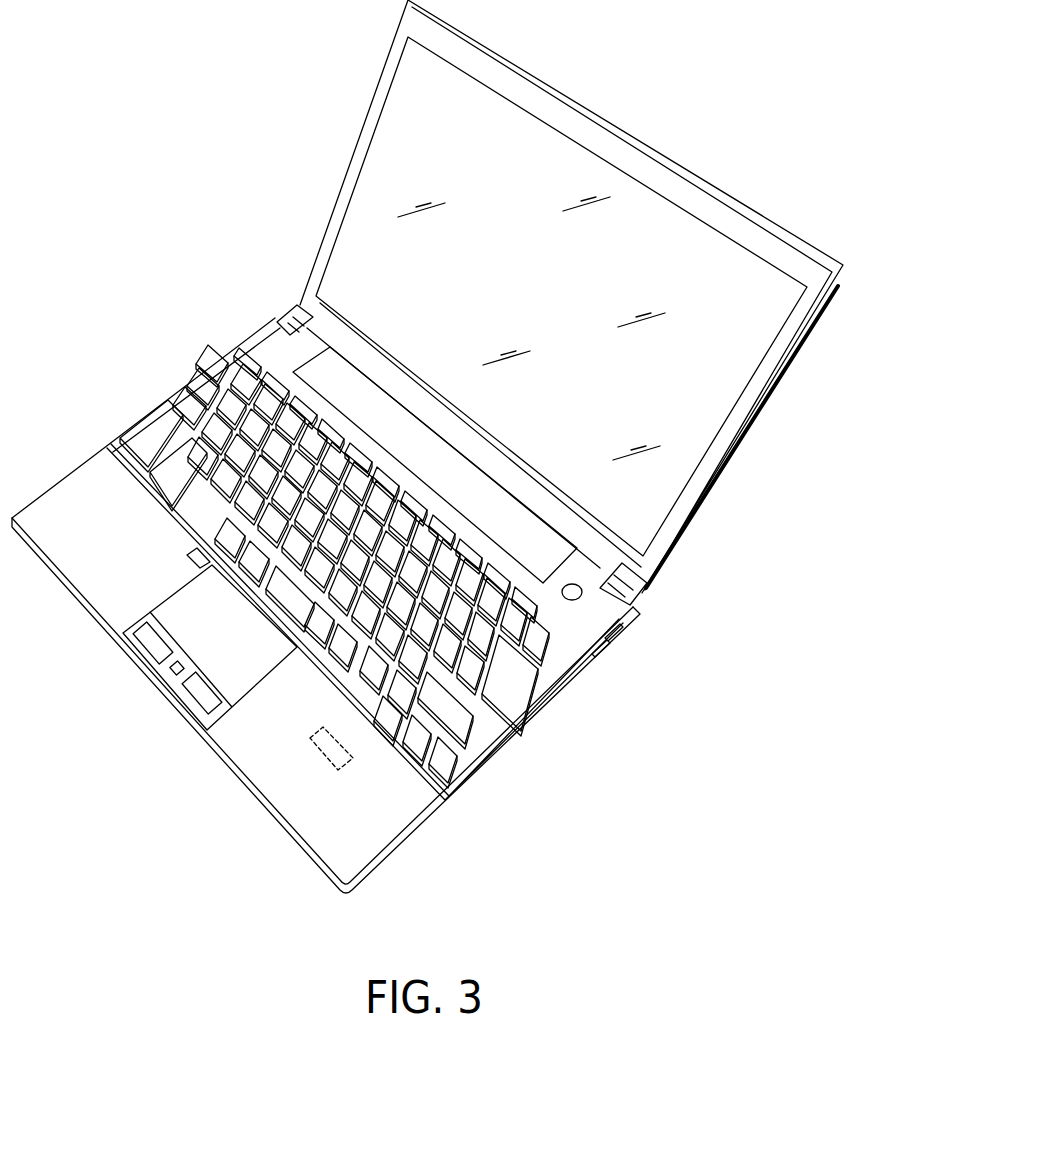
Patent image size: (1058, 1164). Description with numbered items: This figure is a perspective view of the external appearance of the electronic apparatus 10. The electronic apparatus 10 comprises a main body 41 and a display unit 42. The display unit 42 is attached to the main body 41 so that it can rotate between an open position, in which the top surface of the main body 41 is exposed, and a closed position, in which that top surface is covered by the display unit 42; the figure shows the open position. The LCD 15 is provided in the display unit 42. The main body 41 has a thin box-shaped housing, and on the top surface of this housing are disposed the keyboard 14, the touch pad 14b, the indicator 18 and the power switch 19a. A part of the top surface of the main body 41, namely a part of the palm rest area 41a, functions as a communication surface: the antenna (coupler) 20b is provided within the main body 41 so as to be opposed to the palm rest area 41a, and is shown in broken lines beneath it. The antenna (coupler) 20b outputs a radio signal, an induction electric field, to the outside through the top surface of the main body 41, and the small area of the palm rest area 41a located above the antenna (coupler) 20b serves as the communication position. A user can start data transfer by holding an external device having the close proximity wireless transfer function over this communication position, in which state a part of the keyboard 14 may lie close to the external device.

The electronic apparatus 10 is at (259, 254).
The display unit 42 is at (768, 370).
The LCD 15 is at (660, 490).
The power switch 19a is at (620, 630).
The keyboard 14 is at (527, 675).
The main body 41 is at (478, 760).
The palm rest area 41a is at (347, 838).
The indicator 18 is at (190, 563).
The touch pad 14b is at (240, 678).
The antenna (coupler) 20b is at (327, 762).